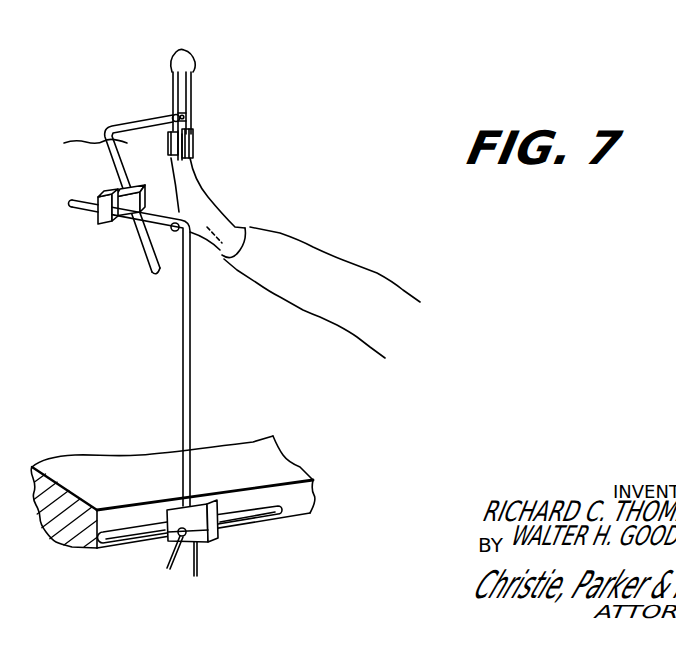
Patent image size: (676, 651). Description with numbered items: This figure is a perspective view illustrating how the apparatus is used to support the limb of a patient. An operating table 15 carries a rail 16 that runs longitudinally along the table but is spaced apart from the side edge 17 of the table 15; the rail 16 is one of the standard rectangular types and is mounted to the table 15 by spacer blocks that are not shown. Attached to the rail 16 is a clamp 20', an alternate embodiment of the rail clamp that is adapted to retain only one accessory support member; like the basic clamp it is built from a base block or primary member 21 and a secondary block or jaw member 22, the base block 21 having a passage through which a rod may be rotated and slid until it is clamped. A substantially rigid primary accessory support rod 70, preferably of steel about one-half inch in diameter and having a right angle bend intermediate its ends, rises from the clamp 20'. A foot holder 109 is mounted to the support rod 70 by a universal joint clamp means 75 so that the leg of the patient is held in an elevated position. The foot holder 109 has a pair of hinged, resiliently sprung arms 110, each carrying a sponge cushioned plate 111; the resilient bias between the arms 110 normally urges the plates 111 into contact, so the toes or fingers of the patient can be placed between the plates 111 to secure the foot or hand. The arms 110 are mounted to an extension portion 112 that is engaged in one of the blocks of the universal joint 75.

The primary accessory support rod 70 is at (183, 395).
The universal joint clamp means 75 is at (98, 224).
The foot holder 109 is at (163, 108).
The resiliently sprung arms 110 is at (182, 50).
The sponge cushioned plate 111 is at (168, 143).
The extension portion 112 is at (82, 145).
The operating table 15 is at (88, 458).
The rail 16 is at (275, 514).
The side edge 17 is at (297, 502).
The base block 21 is at (203, 512).
The jaw member 22 is at (218, 543).
The clamp 20' is at (221, 574).